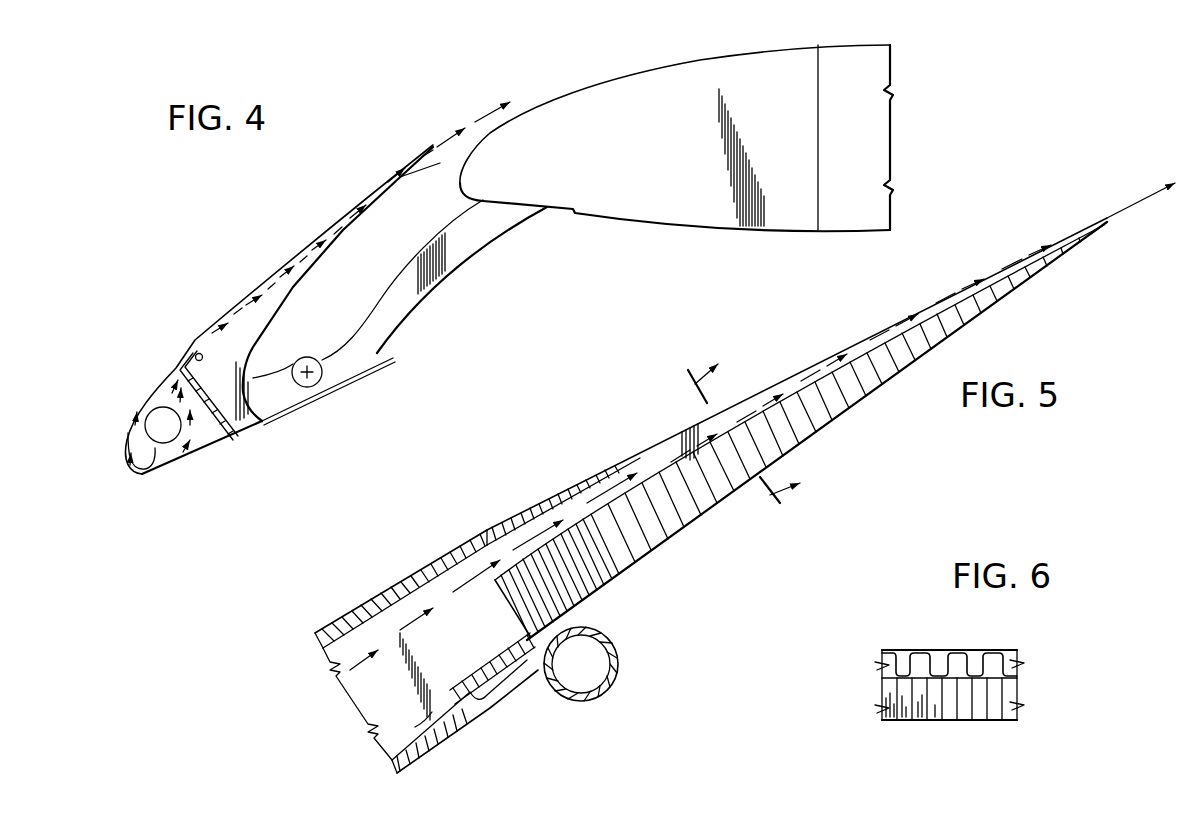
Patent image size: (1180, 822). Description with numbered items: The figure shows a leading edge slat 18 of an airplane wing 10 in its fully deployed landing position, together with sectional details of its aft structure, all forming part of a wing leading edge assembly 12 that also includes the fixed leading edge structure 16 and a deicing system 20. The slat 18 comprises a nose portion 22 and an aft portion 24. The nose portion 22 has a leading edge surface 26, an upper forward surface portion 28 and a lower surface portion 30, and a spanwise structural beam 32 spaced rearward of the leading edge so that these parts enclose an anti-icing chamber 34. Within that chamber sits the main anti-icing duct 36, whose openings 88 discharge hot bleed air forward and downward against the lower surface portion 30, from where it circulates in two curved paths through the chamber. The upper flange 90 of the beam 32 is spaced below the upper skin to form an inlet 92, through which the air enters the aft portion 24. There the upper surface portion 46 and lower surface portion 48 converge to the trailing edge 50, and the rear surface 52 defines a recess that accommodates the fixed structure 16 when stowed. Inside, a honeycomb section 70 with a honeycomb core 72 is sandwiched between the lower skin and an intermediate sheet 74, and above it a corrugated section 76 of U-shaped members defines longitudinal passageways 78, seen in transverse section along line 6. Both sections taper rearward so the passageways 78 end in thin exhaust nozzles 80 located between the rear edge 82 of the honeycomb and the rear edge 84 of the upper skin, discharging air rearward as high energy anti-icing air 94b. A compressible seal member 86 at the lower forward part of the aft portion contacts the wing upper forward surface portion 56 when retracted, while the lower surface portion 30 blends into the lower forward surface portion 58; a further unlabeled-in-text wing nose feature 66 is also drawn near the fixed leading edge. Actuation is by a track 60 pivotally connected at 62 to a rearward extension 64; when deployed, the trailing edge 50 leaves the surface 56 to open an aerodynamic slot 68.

In FIG. 4, the wing 10 is at (230, 270).
In FIG. 4, the wing leading edge assembly 12 is at (227, 300).
In FIG. 4, the fixed leading edge structure 16 is at (460, 172).
In FIG. 4, the leading edge slat 18 is at (135, 403).
In FIG. 5, the leading edge slat 18 is at (400, 573).
In FIG. 4, the deicing system 20 is at (147, 425).
In FIG. 4, the nose portion 22 is at (125, 473).
In FIG. 4, the aft portion 24 is at (346, 208).
In FIG. 5, the aft portion 24 is at (487, 528).
In FIG. 4, the leading edge surface 26 is at (128, 460).
In FIG. 4, the upper forward surface portion 28 is at (150, 395).
In FIG. 4, the lower surface portion 30 is at (173, 462).
In FIG. 4, the structural beam 32 is at (233, 437).
In FIG. 4, the anti-icing chamber 34 is at (137, 447).
In FIG. 4, the main anti-icing duct 36 is at (147, 437).
In FIG. 4, the upper surface portion 46 is at (338, 230).
In FIG. 5, the upper surface portion 46 is at (830, 350).
In FIG. 6, the upper surface portion 46 is at (1019, 650).
In FIG. 4, the lower surface portion 48 is at (325, 263).
In FIG. 5, the lower surface portion 48 is at (815, 420).
In FIG. 6, the lower surface portion 48 is at (993, 721).
In FIG. 4, the trailing edge 50 is at (432, 145).
In FIG. 5, the trailing edge 50 is at (1172, 180).
In FIG. 4, the rear surface 52 is at (278, 408).
In FIG. 4, the upper forward surface portion 56 is at (547, 100).
In FIG. 4, the lower forward surface portion 58 is at (557, 210).
In FIG. 4, the track 60 is at (467, 253).
In FIG. 4, the pivotal connection 62 is at (318, 383).
In FIG. 4, the rearward extension 64 is at (300, 396).
In FIG. 4, the wing leading edge nose 66 is at (483, 198).
In FIG. 4, the aerodynamic slot 68 is at (440, 163).
In FIG. 5, the honeycomb section 70 is at (692, 510).
In FIG. 6, the honeycomb section 70 is at (918, 712).
In FIG. 5, the honeycomb core 72 is at (710, 490).
In FIG. 6, the honeycomb core 72 is at (948, 712).
In FIG. 5, the intermediate sheet 74 is at (613, 487).
In FIG. 6, the intermediate sheet 74 is at (1000, 675).
In FIG. 5, the corrugated section 76 is at (593, 480).
In FIG. 6, the corrugated section 76 is at (975, 656).
In FIG. 5, the passageways 78 is at (567, 500).
In FIG. 6, the passageways 78 is at (902, 656).
In FIG. 5, the exhaust nozzles 80 is at (1057, 240).
In FIG. 5, the rear edge of honeycomb section 82 is at (1113, 223).
In FIG. 5, the rear edge of upper skin 84 is at (1133, 207).
In FIG. 5, the compressible seal member 86 is at (616, 650).
In FIG. 4, the openings 88 is at (155, 455).
In FIG. 4, the upper flange 90 is at (193, 356).
In FIG. 4, the inlet 92 is at (177, 368).
In FIG. 4, the high energy anti-icing air 94b is at (483, 108).
In FIG. 5, the section line 6- 6 is at (752, 425).